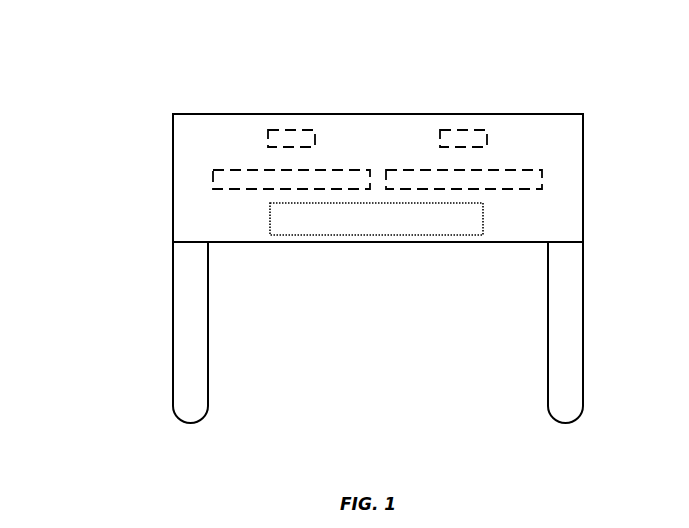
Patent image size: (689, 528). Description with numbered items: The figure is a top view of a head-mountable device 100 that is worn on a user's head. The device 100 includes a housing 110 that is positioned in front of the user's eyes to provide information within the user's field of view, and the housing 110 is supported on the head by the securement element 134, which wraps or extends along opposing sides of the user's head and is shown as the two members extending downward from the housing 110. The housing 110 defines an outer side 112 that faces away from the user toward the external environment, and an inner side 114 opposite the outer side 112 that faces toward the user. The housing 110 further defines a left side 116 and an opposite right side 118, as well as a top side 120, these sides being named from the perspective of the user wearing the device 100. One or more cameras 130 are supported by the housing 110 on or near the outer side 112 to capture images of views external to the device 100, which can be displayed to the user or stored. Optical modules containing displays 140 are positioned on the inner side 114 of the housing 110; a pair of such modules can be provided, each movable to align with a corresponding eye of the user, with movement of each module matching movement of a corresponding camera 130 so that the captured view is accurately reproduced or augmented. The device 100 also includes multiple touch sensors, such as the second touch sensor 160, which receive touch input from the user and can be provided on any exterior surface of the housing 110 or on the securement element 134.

The head-mountable device 100 is at (152, 108).
The housing 110 is at (181, 141).
The outer side 112 is at (564, 113).
The inner side 114 is at (497, 243).
The left side 116 is at (175, 180).
The right side 118 is at (583, 181).
The top side 120 is at (552, 228).
The cameras 130 is at (297, 130).
The displays 140 is at (351, 170).
The second touch sensor 160 is at (383, 236).
The securement element 134 is at (190, 338).